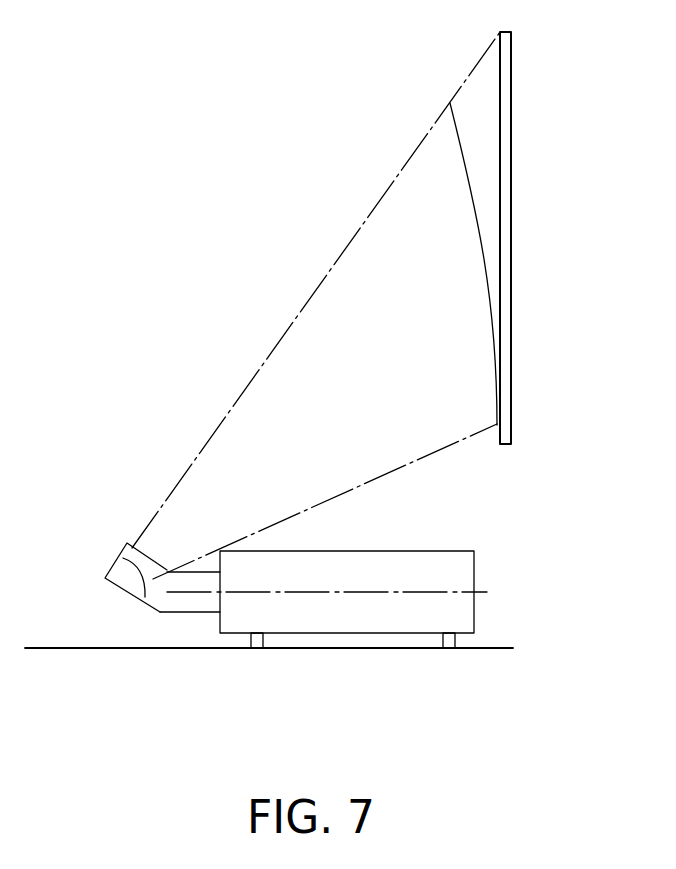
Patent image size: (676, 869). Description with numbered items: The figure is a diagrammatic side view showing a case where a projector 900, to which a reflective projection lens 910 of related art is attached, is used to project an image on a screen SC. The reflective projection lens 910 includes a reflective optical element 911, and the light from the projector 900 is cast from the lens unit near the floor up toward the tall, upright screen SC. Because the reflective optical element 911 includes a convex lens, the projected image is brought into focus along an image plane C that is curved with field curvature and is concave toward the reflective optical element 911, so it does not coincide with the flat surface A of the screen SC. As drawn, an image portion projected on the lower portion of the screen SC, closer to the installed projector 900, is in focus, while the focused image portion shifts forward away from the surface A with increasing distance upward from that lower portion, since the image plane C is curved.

The screen SC is at (512, 111).
The flat surface of the screen A is at (502, 170).
The image plane C is at (483, 241).
The projector 900 is at (302, 368).
The reflective projection lens 910 is at (138, 597).
The reflective optical element 911 is at (126, 576).